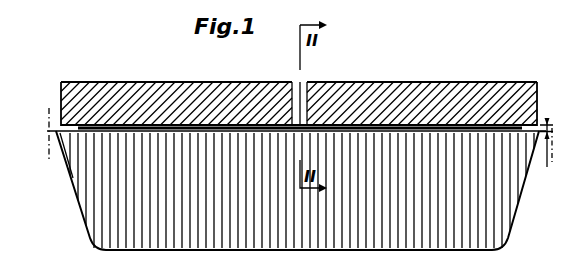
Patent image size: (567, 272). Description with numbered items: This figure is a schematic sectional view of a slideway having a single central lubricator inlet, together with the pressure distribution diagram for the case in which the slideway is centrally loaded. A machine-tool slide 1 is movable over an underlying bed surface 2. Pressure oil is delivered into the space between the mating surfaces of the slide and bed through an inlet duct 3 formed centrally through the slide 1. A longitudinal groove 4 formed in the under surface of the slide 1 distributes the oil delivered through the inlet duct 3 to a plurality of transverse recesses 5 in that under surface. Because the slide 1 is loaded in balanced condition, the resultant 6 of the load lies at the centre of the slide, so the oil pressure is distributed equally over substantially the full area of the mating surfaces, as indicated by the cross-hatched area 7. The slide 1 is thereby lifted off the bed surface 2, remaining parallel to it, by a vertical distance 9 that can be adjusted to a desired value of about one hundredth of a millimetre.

The machine-tool slide 1 is at (118, 90).
The bed surface 2 is at (64, 159).
The inlet duct 3 is at (303, 96).
The longitudinal groove 4 is at (381, 125).
The transverse recesses 5 is at (404, 126).
The resultant of the load 6 is at (300, 72).
The cross-hatched area 7 is at (498, 208).
The vertical distance 9 is at (547, 138).